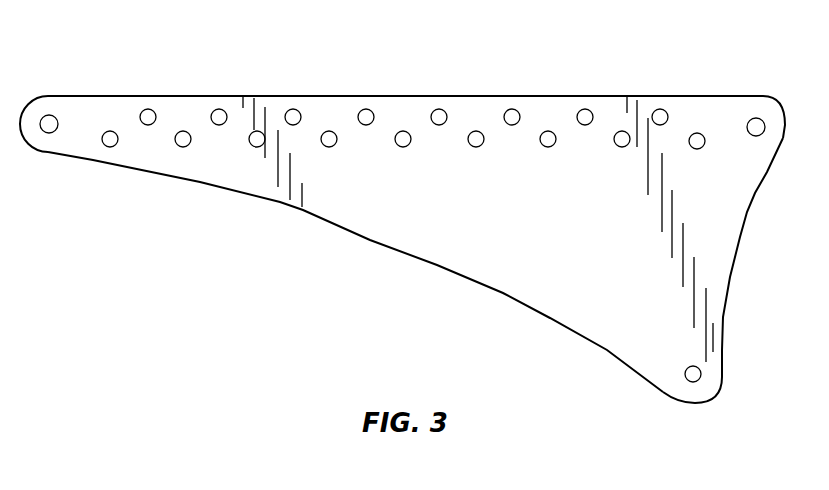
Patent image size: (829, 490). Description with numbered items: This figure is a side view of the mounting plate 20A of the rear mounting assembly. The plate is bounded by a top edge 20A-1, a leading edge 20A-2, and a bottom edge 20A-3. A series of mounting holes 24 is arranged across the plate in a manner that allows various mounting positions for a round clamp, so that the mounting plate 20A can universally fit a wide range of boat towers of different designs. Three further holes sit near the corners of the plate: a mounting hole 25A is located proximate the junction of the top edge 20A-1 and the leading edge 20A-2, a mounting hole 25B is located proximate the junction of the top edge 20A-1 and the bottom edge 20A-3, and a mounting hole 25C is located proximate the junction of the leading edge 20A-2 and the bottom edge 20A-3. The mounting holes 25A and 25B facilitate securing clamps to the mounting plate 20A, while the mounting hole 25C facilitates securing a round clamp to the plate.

The mounting plate 20A is at (424, 245).
The top edge 20A-1 is at (395, 96).
The leading edge 20A-2 is at (740, 238).
The bottom edge 20A-3 is at (200, 183).
The mounting holes 24 is at (288, 112).
The mounting hole 25A is at (756, 122).
The mounting hole 25B is at (49, 116).
The mounting hole 25C is at (688, 378).